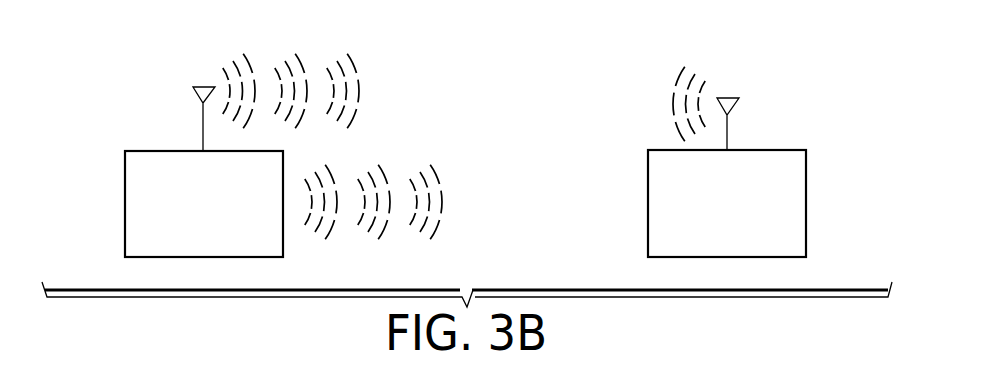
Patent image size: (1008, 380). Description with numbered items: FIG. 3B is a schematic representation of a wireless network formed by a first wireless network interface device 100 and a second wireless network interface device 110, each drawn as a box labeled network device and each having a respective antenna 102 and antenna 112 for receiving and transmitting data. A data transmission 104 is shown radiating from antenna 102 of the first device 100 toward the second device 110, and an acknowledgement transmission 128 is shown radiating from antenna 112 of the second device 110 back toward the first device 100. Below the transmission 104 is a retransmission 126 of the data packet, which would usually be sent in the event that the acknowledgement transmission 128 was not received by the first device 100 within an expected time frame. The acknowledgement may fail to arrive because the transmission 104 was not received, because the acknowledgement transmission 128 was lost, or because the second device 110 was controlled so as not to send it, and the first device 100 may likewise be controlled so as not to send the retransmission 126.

The first wireless network interface device 100 is at (125, 203).
The antenna 102 is at (205, 86).
The transmission 104 is at (373, 87).
The second wireless network interface device 110 is at (807, 202).
The antenna 112 is at (729, 97).
The retransmission 126 is at (452, 203).
The acknowledgement transmission 128 is at (660, 97).